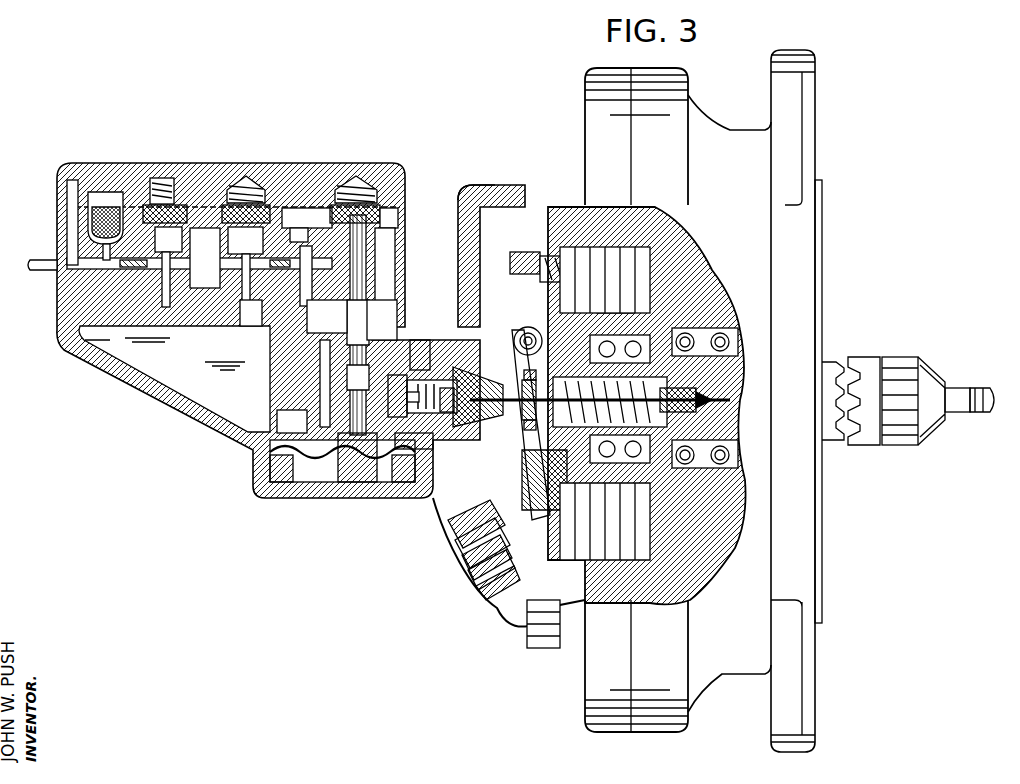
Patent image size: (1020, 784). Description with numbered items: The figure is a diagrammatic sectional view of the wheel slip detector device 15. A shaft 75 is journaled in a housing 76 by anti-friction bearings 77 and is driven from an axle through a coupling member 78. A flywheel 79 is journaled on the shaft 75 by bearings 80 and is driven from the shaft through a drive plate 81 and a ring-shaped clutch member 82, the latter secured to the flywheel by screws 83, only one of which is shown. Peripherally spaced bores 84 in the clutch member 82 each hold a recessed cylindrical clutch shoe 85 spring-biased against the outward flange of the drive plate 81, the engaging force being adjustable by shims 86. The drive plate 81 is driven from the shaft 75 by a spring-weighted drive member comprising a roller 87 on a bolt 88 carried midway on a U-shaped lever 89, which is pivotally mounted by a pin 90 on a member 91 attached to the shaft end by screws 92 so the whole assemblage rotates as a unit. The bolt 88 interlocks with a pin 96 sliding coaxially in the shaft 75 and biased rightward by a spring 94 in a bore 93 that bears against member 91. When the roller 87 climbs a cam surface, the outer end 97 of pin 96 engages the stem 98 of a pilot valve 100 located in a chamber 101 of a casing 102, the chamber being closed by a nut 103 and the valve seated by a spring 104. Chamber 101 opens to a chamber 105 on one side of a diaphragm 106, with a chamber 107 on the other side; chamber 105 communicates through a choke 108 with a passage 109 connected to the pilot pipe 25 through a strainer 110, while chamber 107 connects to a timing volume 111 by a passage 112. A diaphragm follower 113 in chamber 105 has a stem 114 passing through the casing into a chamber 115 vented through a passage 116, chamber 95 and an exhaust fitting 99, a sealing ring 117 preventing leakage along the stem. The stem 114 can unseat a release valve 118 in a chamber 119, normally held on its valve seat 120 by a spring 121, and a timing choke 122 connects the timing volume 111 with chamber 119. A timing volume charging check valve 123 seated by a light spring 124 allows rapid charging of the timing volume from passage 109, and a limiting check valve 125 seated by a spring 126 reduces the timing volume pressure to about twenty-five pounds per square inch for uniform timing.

The wheel slip detector device 15 is at (585, 111).
The pilot pipe 25 is at (46, 260).
The shaft 75 is at (740, 380).
The housing 76 is at (712, 684).
The anti-friction bearings 77 is at (740, 325).
The coupling member 78 is at (975, 392).
The flywheel 79 is at (660, 218).
The bearings 80 is at (722, 293).
The drive plate 81 is at (548, 607).
The clutch member 82 is at (487, 592).
The screws 83 is at (540, 600).
The bores 84 is at (543, 260).
The clutch shoe 85 is at (587, 258).
The shims 86 is at (500, 205).
The roller 87 is at (460, 536).
The bolt 88 is at (464, 548).
The U-shaped lever 89 is at (470, 562).
The pin 90 is at (527, 327).
The member 91 is at (528, 372).
The screws 92 is at (532, 420).
The bore 93 is at (740, 450).
The spring 94 is at (700, 323).
The chamber 95 is at (502, 207).
The pin 96 is at (708, 300).
The outer end of pin 97 is at (530, 395).
The stem 98 is at (440, 385).
The exhaust fitting 99 is at (474, 577).
The pilot valve 100 is at (458, 392).
The chamber 101 is at (452, 388).
The casing 102 is at (400, 215).
The nut 103 is at (462, 395).
The spring 104 is at (446, 385).
The chamber 105 is at (410, 450).
The diaphragm 106 is at (386, 465).
The chamber 107 is at (313, 472).
The choke 108 is at (300, 448).
The passage 109 is at (105, 296).
The strainer 110 is at (113, 204).
The timing volume 111 is at (103, 338).
The passage 112 is at (278, 470).
The diaphragm follower 113 is at (350, 445).
The stem 114 is at (353, 345).
The chamber 115 is at (330, 330).
The passage 116 is at (420, 345).
The sealing ring 117 is at (317, 360).
The release valve 118 is at (378, 182).
The chamber 119 is at (320, 205).
The valve seat 120 is at (393, 200).
The spring 121 is at (357, 195).
The timing choke 122 is at (305, 192).
The timing volume charging check valve 123 is at (262, 196).
The light spring 124 is at (233, 178).
The limiting check valve 125 is at (188, 180).
The spring 126 is at (153, 180).